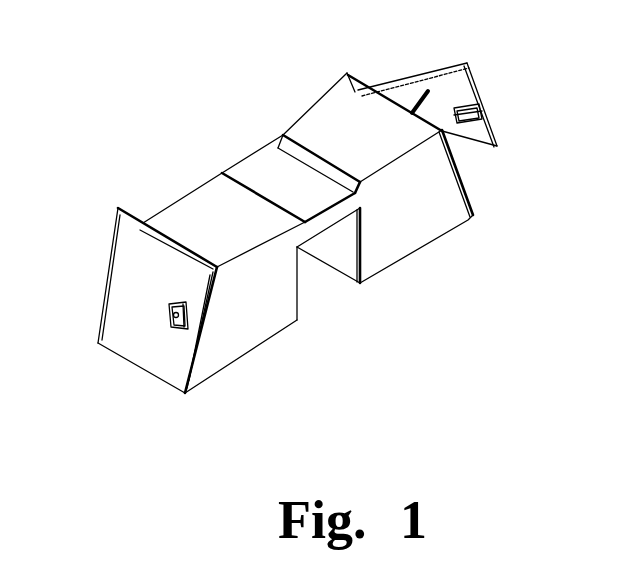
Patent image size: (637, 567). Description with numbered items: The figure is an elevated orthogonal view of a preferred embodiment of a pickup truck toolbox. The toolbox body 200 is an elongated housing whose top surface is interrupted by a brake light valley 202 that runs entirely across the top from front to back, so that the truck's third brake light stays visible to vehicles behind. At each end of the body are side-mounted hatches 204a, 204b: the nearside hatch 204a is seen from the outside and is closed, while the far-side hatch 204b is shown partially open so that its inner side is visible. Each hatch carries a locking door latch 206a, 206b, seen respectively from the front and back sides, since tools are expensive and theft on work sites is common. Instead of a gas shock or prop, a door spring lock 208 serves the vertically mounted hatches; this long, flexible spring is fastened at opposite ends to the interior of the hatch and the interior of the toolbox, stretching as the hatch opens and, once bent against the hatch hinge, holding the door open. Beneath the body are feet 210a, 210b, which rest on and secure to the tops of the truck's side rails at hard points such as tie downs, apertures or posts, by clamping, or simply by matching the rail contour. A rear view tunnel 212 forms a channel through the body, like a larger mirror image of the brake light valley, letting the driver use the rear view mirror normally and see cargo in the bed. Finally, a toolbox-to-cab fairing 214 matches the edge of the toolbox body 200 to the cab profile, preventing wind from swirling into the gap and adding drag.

The toolbox body 200 is at (225, 217).
The brake light valley 202 is at (293, 183).
The side-mounted hatch 204a is at (152, 278).
The side-mounted hatch 204b is at (447, 87).
The door latch 206a is at (173, 333).
The door latch 206b is at (481, 125).
The door spring lock 208 is at (430, 100).
The foot 210a is at (193, 385).
The foot 210b is at (467, 222).
The rear view tunnel 212 is at (315, 277).
The toolbox-to-cab fairing 214 is at (127, 237).